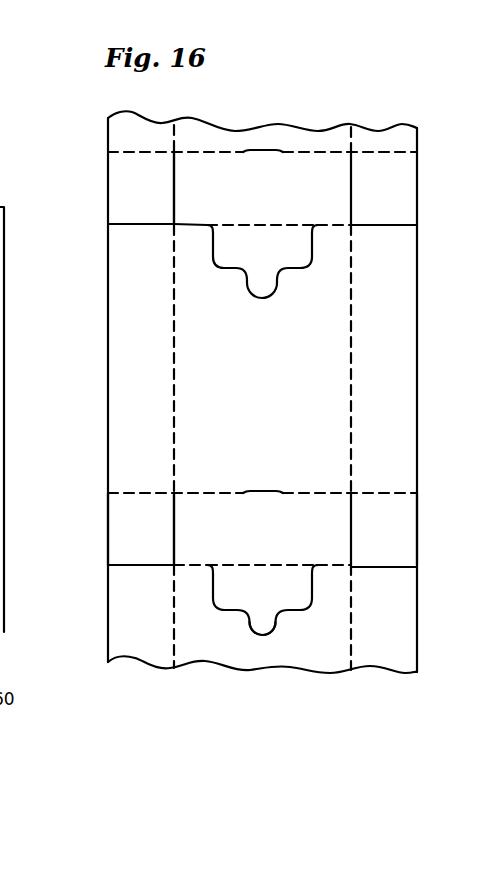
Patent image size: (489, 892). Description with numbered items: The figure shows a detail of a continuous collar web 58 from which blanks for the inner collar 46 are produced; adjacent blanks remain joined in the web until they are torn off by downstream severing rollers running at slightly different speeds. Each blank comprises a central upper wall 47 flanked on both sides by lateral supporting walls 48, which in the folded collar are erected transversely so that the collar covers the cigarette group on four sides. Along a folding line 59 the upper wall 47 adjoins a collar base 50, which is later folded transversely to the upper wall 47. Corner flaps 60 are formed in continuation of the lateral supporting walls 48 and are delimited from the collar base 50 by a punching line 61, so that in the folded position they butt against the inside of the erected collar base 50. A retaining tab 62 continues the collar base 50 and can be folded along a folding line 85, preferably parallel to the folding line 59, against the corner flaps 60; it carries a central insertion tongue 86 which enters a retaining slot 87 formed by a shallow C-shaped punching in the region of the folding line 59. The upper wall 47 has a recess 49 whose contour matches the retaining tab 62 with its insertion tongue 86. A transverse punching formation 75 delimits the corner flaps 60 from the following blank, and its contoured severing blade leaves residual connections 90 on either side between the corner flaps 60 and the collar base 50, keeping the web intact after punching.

The collar web 58 is at (280, 51).
The inner collar 46 is at (431, 198).
The upper wall 47 is at (247, 368).
The lateral supporting walls 48 is at (124, 353).
The recess 49 is at (273, 245).
The retaining tab 62 is at (275, 593).
The collar base 50 is at (275, 196).
The folding line 59 is at (318, 493).
The corner flaps 60 is at (120, 513).
The punching line 61 is at (174, 195).
The transverse punching formation 75 is at (383, 569).
The folding line 85 is at (283, 565).
The insertion tongue 86 is at (250, 630).
The retaining slot 87 is at (255, 493).
The residual connections 90 is at (174, 225).